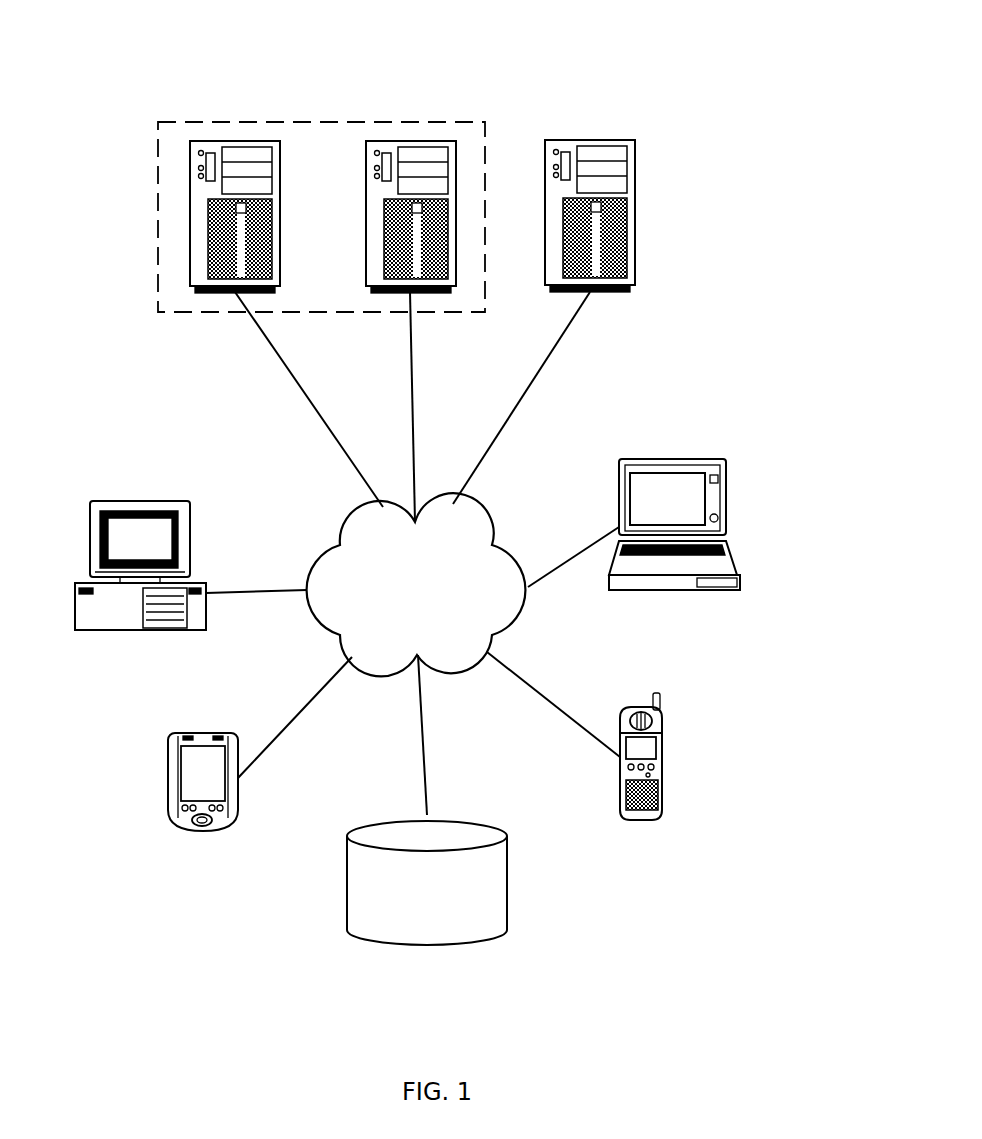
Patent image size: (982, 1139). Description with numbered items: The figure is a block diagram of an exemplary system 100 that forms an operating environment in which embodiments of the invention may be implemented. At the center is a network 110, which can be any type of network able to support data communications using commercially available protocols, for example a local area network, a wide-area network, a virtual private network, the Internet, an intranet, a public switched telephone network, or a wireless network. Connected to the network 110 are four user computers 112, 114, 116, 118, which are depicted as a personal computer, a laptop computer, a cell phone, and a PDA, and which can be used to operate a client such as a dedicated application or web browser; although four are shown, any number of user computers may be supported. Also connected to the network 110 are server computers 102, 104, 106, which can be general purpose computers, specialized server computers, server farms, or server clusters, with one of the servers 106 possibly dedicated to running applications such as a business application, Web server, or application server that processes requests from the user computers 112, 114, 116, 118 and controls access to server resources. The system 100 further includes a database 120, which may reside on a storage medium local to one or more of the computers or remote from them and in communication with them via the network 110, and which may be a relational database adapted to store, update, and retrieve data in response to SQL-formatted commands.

The system 100 is at (711, 140).
The server computer 102 is at (218, 141).
The server computer 104 is at (408, 141).
The server computer 106 is at (637, 208).
The network 110 is at (416, 584).
The user computer 112 is at (137, 500).
The user computer 114 is at (668, 459).
The user computer 116 is at (640, 822).
The user computer 118 is at (200, 832).
The database 120 is at (427, 883).